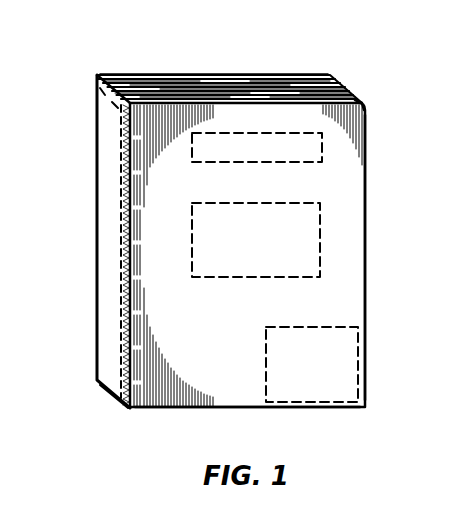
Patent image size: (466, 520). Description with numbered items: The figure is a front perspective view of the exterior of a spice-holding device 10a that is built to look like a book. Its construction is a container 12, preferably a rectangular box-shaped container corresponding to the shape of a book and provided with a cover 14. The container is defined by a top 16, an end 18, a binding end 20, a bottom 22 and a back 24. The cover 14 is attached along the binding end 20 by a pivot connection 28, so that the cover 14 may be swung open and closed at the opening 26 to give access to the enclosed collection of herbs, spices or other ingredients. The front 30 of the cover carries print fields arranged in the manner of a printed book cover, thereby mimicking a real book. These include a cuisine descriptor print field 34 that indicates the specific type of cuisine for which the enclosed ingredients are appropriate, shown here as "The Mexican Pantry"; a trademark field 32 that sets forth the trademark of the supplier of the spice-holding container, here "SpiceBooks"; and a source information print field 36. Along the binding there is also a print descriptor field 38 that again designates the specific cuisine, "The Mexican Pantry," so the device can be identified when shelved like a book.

The spice-holding device 10a is at (231, 222).
The container 12 is at (262, 74).
The cover 14 is at (362, 133).
The top 16 is at (165, 84).
The end 18 is at (367, 280).
The binding end 20 is at (100, 88).
The bottom 22 is at (315, 408).
The back 24 is at (95, 277).
The opening 26 is at (358, 102).
The pivot connection 28 is at (122, 397).
The front 30 is at (355, 157).
The trademark field 32 is at (320, 153).
The cuisine descriptor print field 34 is at (318, 263).
The source information print field 36 is at (358, 338).
The print descriptor field 38 is at (98, 163).